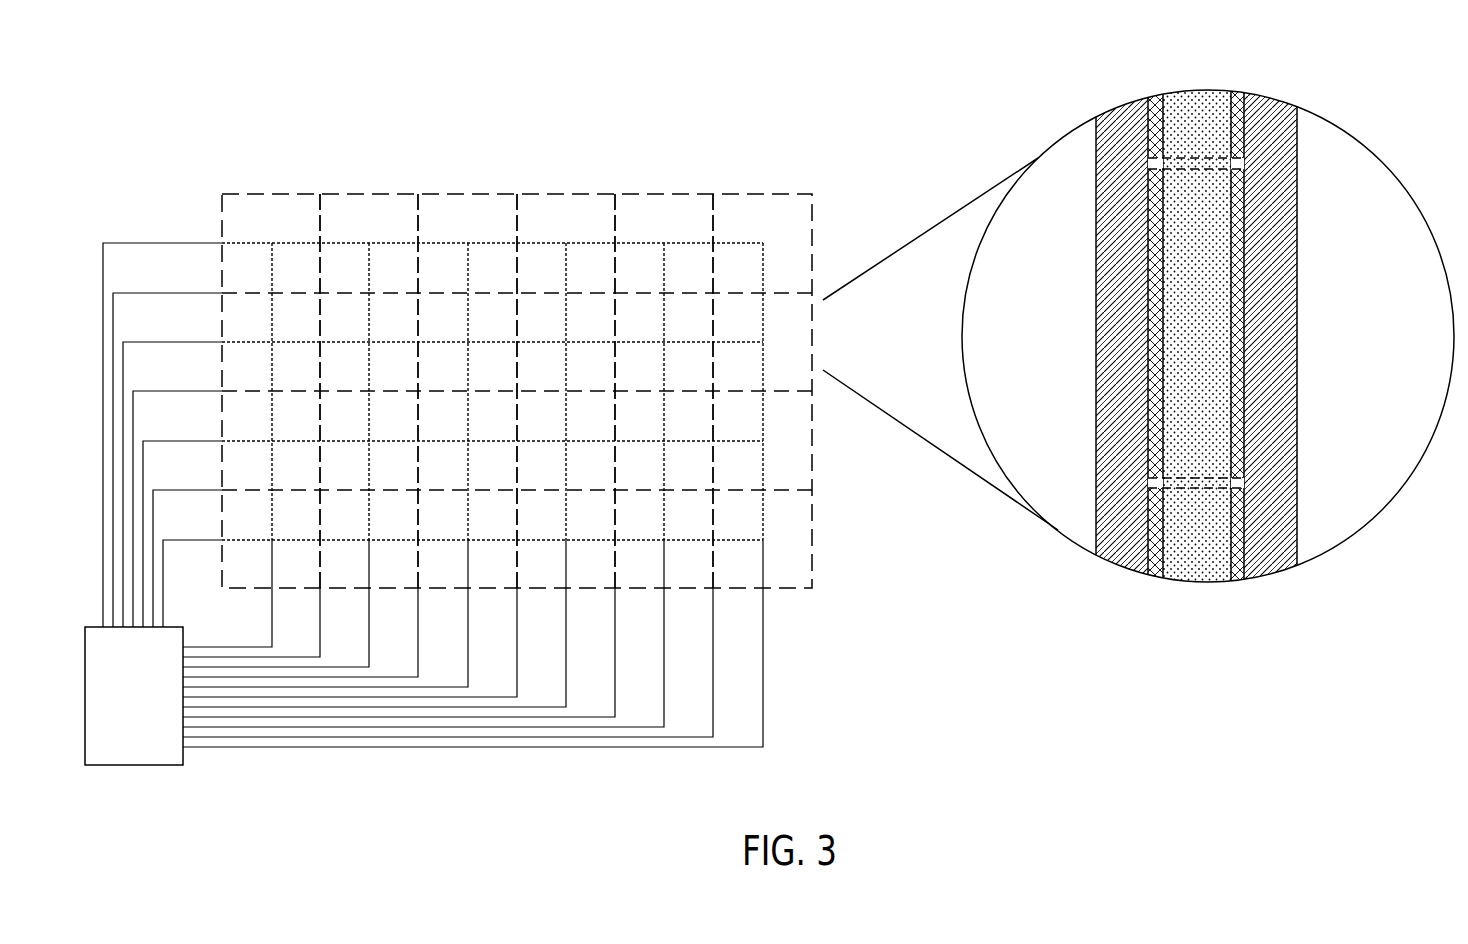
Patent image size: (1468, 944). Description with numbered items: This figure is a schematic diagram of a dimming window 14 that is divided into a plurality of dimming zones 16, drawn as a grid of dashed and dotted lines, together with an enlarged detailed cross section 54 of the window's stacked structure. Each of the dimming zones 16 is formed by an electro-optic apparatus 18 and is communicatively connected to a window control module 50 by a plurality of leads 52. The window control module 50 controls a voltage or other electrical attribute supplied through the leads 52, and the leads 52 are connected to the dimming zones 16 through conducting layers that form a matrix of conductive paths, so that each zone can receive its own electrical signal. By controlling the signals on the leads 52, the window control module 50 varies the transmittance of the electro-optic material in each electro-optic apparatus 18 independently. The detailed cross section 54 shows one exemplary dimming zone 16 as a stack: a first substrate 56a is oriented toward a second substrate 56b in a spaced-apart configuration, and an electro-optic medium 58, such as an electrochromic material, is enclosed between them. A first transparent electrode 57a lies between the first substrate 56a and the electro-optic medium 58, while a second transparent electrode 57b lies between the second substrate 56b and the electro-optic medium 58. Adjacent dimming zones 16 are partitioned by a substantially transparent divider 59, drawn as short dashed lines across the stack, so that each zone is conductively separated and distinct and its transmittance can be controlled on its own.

The dimming window 14 is at (189, 126).
The dimming zones 16 is at (283, 210).
The electro-optic apparatuses 18 is at (517, 391).
The window control module 50 is at (145, 738).
The leads 52 is at (307, 748).
The detailed cross section 54 is at (959, 141).
The first substrate 56a is at (1115, 265).
The second substrate 56b is at (1277, 283).
The first transparent electrode 57a is at (1157, 317).
The second transparent electrode 57b is at (1247, 342).
The electro-optic medium 58 is at (1193, 343).
The transparent divider 59 is at (1200, 167).